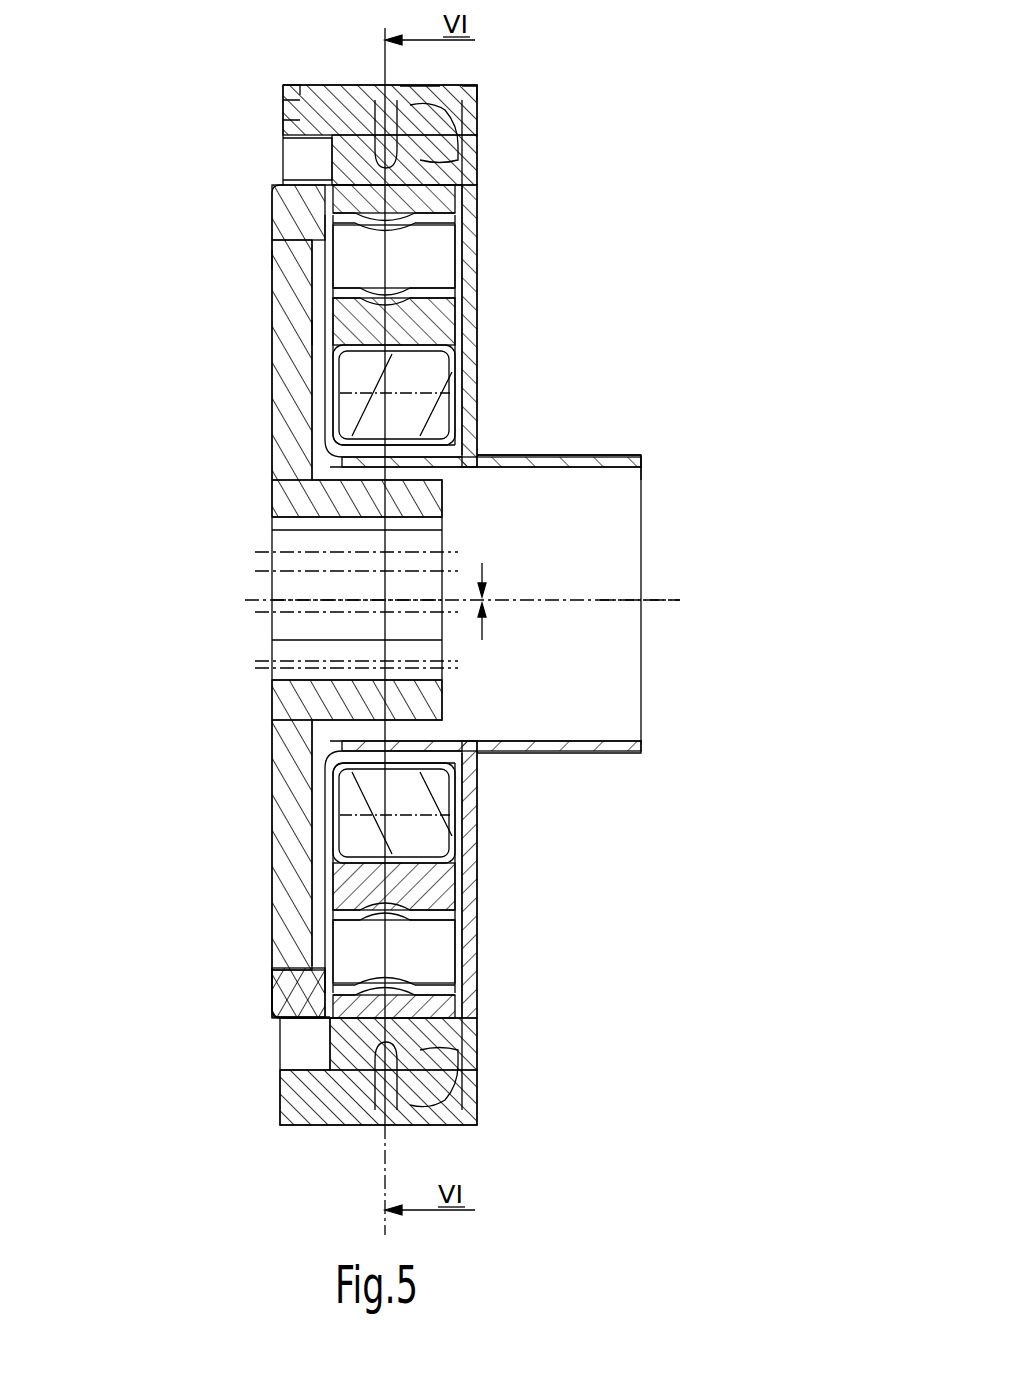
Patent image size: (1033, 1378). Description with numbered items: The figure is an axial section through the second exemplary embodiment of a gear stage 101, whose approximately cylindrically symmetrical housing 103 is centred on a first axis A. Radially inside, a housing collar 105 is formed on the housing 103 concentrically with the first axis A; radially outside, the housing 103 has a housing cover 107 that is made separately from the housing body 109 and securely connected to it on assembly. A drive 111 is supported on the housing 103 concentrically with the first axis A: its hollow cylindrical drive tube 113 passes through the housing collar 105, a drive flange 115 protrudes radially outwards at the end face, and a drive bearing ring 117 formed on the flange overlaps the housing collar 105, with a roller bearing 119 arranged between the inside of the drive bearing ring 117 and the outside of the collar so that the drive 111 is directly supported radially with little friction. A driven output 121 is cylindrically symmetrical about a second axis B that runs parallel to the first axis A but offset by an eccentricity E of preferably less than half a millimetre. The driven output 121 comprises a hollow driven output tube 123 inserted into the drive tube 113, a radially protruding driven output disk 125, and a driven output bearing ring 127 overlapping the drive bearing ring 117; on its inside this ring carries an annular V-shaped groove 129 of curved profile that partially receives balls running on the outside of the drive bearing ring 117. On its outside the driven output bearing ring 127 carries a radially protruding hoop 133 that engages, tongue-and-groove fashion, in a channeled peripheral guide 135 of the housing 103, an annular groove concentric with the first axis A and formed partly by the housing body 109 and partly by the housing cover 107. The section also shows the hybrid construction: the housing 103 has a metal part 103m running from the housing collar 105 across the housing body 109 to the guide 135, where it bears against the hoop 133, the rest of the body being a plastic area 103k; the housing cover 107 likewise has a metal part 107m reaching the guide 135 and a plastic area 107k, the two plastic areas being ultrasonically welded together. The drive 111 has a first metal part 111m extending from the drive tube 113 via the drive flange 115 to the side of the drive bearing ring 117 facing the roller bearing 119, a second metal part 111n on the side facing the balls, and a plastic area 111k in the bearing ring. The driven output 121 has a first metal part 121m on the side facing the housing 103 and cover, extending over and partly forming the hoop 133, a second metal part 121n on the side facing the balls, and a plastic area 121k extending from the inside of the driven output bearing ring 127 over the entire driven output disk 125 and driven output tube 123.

The gear stage 101 is at (718, 240).
The housing 103 is at (488, 107).
The plastic area 103k is at (466, 84).
The metal part 103m is at (465, 175).
The housing collar 105 is at (497, 460).
The housing cover 107 is at (283, 118).
The plastic area 107k is at (283, 88).
The metal part 107m is at (352, 85).
The housing body 109 is at (445, 268).
The drive 111 is at (612, 764).
The plastic area 111k is at (335, 328).
The first metal part 111m is at (656, 462).
The second metal part 111n is at (440, 288).
The drive tube 113 is at (537, 757).
The drive flange 115 is at (330, 804).
The drive bearing ring 117 is at (440, 885).
The roller bearing 119 is at (400, 385).
The driven output 121 is at (257, 414).
The plastic area 121k is at (272, 258).
The first metal part 121m is at (460, 187).
The second metal part 121n is at (455, 223).
The driven output tube 123 is at (340, 680).
The driven output disk 125 is at (272, 940).
The driven output bearing ring 127 is at (337, 1018).
The V-shaped groove 129 is at (430, 945).
The hoop 133 is at (275, 207).
The guide 135 is at (408, 85).
The first axis A is at (678, 603).
The second axis B is at (312, 597).
The eccentricity E is at (493, 601).